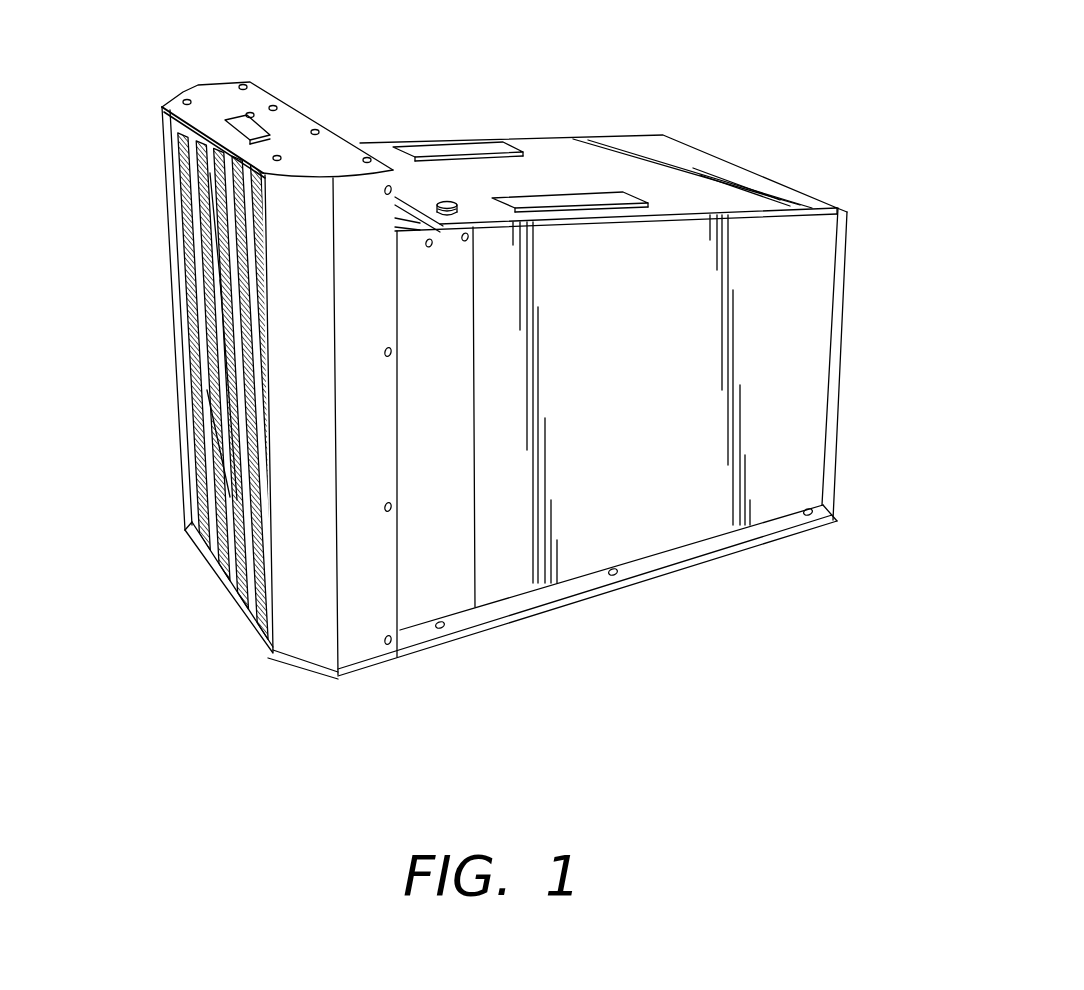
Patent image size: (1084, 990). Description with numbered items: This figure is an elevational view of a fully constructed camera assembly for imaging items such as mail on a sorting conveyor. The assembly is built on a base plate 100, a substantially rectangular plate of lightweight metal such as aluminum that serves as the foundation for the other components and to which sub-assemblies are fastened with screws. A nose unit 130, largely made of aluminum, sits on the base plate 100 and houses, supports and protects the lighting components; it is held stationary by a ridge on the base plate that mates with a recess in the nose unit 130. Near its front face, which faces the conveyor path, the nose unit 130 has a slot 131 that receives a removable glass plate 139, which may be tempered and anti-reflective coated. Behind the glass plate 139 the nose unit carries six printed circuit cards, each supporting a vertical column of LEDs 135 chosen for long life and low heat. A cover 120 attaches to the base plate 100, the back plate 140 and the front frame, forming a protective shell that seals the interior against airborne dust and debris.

The base plate 100 is at (723, 557).
The cover 120 is at (693, 147).
The nose unit 130 is at (183, 92).
The slot 131 is at (198, 120).
The LEDs 135 is at (200, 500).
The glass plate 139 is at (220, 345).
The back plate 140 is at (848, 212).